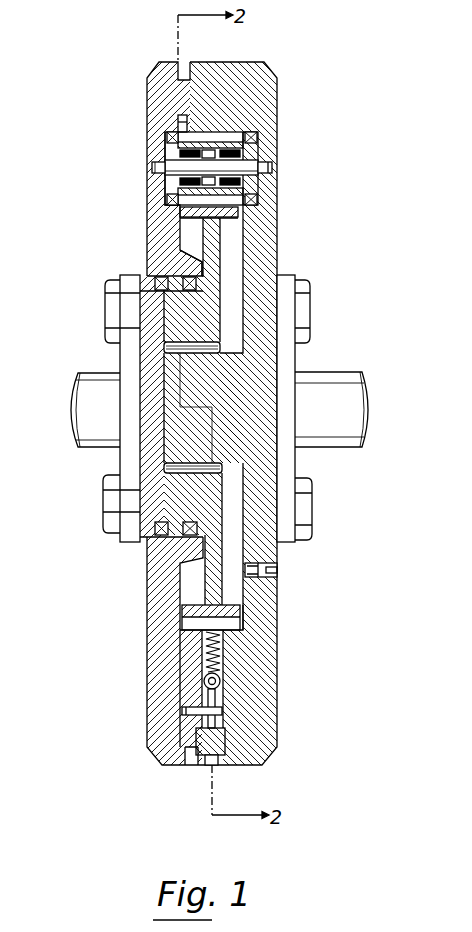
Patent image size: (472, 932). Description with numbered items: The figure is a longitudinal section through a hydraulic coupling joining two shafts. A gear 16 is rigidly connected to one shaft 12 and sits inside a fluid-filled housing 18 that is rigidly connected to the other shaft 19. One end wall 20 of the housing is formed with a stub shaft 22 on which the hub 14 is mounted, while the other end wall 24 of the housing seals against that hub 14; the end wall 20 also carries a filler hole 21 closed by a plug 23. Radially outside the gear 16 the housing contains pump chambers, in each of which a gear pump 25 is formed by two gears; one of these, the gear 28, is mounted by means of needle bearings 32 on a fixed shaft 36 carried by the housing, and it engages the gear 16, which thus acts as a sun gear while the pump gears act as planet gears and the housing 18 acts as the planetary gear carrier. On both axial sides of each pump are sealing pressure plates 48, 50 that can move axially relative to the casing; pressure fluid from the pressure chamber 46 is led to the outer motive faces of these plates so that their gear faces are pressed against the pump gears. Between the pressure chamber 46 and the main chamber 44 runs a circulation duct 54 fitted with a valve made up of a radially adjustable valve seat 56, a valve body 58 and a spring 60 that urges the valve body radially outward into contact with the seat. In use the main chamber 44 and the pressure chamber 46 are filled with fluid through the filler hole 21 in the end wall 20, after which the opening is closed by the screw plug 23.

The shaft 12 is at (90, 405).
The hub 14 is at (163, 330).
The gear 16 is at (160, 222).
The housing 18 is at (262, 84).
The shaft 19 is at (348, 393).
The end wall 20 is at (260, 255).
The filler hole 21 is at (262, 590).
The stub shaft 22 is at (212, 392).
The plug 23 is at (278, 570).
The end wall 24 is at (163, 238).
The gear pump 25 is at (214, 136).
The gear 28 is at (262, 148).
The needle bearings 32 is at (245, 193).
The fixed shaft 36 is at (272, 171).
The main chamber 44 is at (195, 246).
The pressure chamber 46 is at (245, 125).
The pressure plate 48 is at (152, 163).
The pressure plate 50 is at (242, 212).
The circulation duct 54 is at (185, 122).
The valve seat 56 is at (207, 699).
The valve body 58 is at (205, 680).
The spring 60 is at (205, 640).